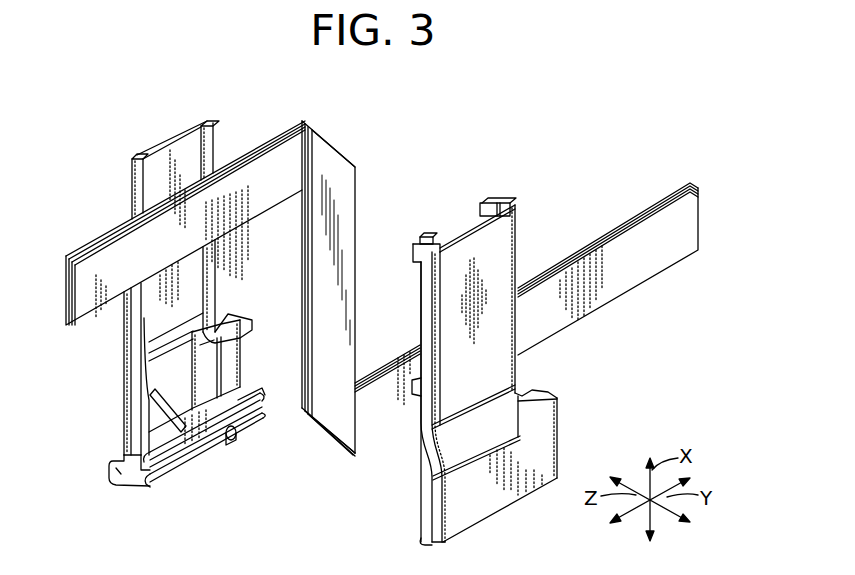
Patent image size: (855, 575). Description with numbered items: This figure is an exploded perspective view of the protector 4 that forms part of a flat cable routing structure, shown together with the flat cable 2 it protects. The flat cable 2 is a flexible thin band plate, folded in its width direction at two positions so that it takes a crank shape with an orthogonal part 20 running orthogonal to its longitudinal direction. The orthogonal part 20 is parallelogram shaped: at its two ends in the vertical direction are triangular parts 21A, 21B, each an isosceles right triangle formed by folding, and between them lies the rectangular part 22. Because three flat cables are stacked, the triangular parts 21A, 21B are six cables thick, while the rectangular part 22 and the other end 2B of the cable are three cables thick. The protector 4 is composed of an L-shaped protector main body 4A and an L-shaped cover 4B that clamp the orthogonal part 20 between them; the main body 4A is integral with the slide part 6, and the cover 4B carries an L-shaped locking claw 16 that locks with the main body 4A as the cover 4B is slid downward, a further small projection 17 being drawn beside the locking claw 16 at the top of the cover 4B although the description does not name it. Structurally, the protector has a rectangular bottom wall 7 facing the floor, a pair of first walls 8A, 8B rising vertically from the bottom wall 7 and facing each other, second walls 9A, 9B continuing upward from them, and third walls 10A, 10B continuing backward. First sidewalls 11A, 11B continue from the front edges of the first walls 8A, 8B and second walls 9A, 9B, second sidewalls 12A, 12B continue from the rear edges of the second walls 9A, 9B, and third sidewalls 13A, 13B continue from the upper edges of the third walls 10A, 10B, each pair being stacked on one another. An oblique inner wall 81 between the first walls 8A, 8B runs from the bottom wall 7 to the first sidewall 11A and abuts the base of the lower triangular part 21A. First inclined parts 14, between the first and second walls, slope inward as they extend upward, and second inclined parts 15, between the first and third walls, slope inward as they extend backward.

The flat cable 2 is at (638, 212).
The other end of flat cable 2B is at (76, 260).
The protector 4 is at (665, 320).
The protector main body 4A is at (358, 277).
The cover 4B is at (512, 347).
The slide part 6 is at (210, 448).
The bottom wall 7 is at (248, 395).
The first wall 8A is at (173, 372).
The first wall 8B is at (505, 495).
The second wall 9A is at (157, 312).
The second wall 9B is at (505, 262).
The third wall 10A is at (232, 345).
The third wall 10B is at (545, 465).
The first sidewall 11A is at (132, 168).
The first sidewall 11B is at (425, 292).
The second sidewall 12A is at (209, 121).
The second sidewall 12B is at (518, 214).
The third sidewall 13A is at (227, 318).
The third sidewall 13B is at (522, 390).
The first inclined part 14 is at (157, 345).
The second inclined part 15 is at (205, 378).
The locking claw 16 is at (426, 238).
The projection 17 is at (502, 200).
The orthogonal part 20 is at (356, 295).
The triangular part 21A is at (333, 410).
The triangular part 21B is at (330, 157).
The rectangular part 22 is at (340, 250).
The inner wall 81 is at (118, 447).